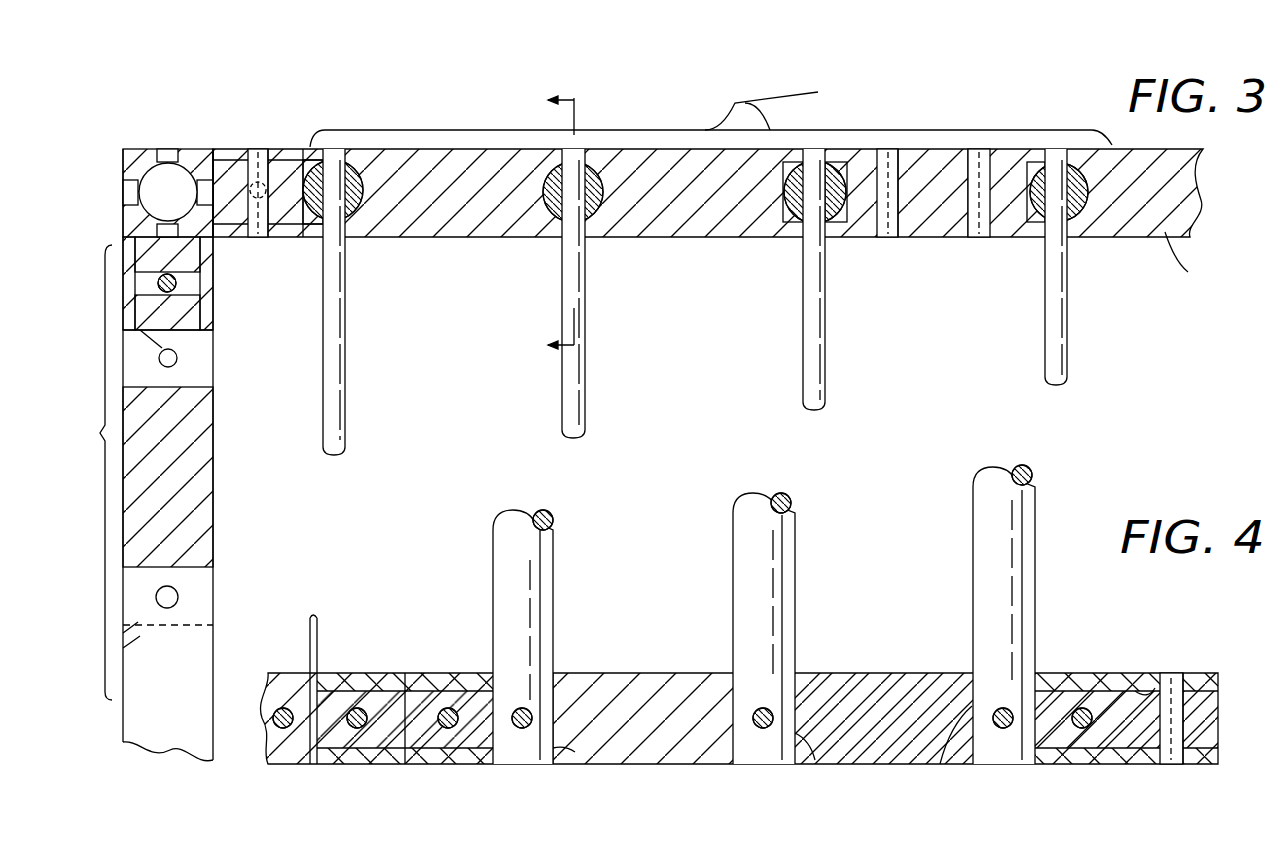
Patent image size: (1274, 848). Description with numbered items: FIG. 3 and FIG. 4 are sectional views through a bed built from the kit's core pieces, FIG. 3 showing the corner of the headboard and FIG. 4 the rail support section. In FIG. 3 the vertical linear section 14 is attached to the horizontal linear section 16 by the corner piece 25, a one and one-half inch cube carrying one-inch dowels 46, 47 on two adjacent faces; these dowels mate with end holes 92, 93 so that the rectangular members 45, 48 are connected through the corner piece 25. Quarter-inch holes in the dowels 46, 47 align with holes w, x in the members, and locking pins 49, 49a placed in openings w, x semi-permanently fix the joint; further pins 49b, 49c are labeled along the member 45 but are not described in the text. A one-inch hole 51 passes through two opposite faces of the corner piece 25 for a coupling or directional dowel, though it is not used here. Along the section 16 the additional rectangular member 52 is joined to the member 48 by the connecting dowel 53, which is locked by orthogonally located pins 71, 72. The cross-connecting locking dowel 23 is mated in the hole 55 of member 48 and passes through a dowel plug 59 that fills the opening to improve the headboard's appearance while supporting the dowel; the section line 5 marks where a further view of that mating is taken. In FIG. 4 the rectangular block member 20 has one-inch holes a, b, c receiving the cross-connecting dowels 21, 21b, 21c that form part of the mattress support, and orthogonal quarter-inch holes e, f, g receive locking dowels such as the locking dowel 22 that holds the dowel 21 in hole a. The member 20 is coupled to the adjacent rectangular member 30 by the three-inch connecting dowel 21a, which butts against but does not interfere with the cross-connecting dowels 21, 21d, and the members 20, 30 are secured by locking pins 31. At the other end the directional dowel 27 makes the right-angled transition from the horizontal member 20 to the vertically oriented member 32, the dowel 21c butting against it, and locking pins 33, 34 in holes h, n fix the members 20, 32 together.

In FIG. 3, the vertical linear section 14 is at (84, 472).
In FIG. 3, the horizontal linear section 16 is at (711, 109).
In FIG. 4, the rectangular block member 20 is at (860, 685).
In FIG. 4, the cross-connecting dowel 21 is at (540, 590).
In FIG. 4, the connecting dowel 21a is at (385, 695).
In FIG. 4, the cross-connecting dowel 21b is at (782, 583).
In FIG. 4, the cross-connecting dowel 21c is at (1030, 497).
In FIG. 4, the cross-connecting dowel 21d is at (317, 622).
In FIG. 4, the locking dowel 22 is at (545, 742).
In FIG. 3, the cross-connecting locking dowel 23 is at (580, 358).
In FIG. 3, the corner piece 25 is at (130, 150).
In FIG. 4, the directional dowel 27 is at (1087, 708).
In FIG. 4, the rectangular member 30 is at (350, 755).
In FIG. 4, the locking pin 31 is at (452, 730).
In FIG. 4, the rectangular member 32 is at (1205, 688).
In FIG. 4, the locking pin 33 is at (1063, 760).
In FIG. 4, the locking pin 34 is at (1178, 764).
In FIG. 3, the rectangular member 45 is at (195, 455).
In FIG. 3, the dowel 46 is at (177, 323).
In FIG. 3, the dowel 47 is at (305, 148).
In FIG. 3, the rectangular member 48 is at (428, 205).
In FIG. 3, the locking pin 49 is at (175, 290).
In FIG. 3, the locking pin 49a is at (250, 149).
In FIG. 3, the pin 49b is at (177, 358).
In FIG. 3, the pin 49c is at (170, 608).
In FIG. 3, the hole 51 is at (135, 192).
In FIG. 3, the rectangular member 52 is at (1189, 265).
In FIG. 3, the connecting dowel 53 is at (955, 220).
In FIG. 3, the hole 55 is at (600, 165).
In FIG. 3, the dowel plug 59 is at (590, 205).
In FIG. 3, the locking pin 71 is at (888, 240).
In FIG. 3, the locking pin 72 is at (980, 240).
In FIG. 3, the end hole 92 is at (220, 238).
In FIG. 3, the end hole 93 is at (292, 238).
In FIG. 3, the section line 5— 5 is at (543, 224).
In FIG. 3, the hole x is at (280, 149).
In FIG. 3, the hole w is at (177, 285).
In FIG. 4, the hole a is at (560, 748).
In FIG. 4, the hole b is at (815, 760).
In FIG. 4, the hole c is at (940, 764).
In FIG. 4, the hole e is at (527, 708).
In FIG. 4, the hole f is at (768, 708).
In FIG. 4, the hole g is at (1008, 708).
In FIG. 4, the hole h is at (1092, 722).
In FIG. 4, the hole n is at (1150, 688).